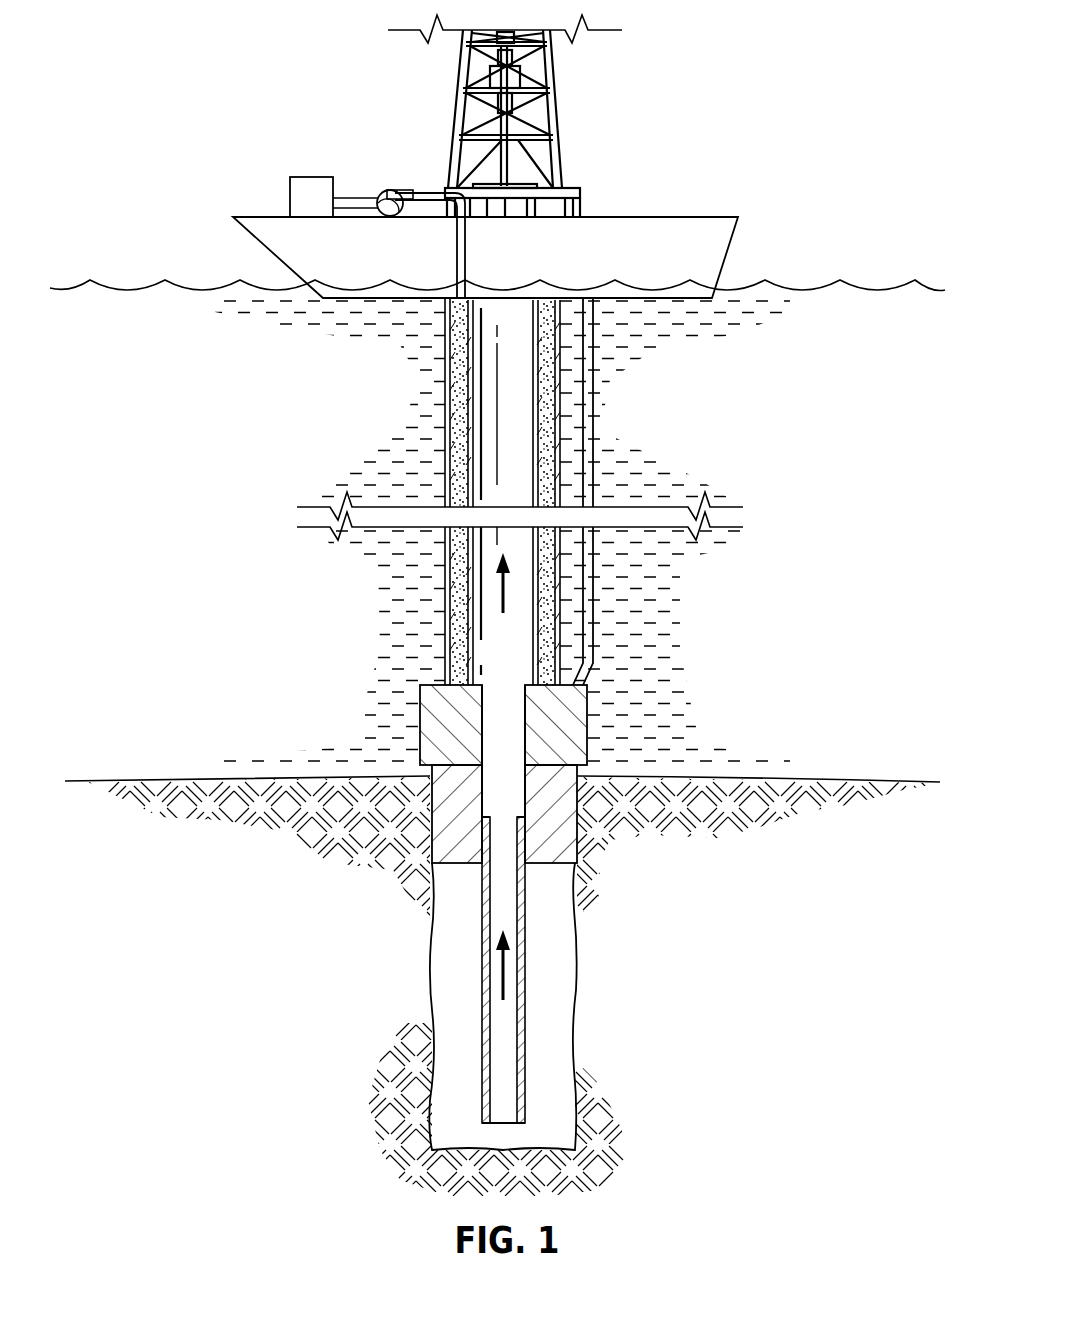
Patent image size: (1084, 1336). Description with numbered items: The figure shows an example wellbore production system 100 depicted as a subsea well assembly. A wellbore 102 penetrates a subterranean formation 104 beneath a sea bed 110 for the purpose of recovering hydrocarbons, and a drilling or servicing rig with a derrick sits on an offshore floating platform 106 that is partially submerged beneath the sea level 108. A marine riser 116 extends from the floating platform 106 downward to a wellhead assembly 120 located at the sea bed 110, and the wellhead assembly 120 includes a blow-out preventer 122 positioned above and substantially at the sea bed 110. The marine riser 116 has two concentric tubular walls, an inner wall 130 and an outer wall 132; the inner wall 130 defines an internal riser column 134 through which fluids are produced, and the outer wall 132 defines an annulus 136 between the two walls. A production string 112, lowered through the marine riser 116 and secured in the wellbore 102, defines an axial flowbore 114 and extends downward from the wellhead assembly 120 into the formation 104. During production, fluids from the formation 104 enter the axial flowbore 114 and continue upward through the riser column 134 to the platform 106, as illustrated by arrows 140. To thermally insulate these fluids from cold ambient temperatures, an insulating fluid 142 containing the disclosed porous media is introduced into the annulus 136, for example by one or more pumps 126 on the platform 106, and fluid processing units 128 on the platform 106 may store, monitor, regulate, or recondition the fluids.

The wellbore production system 100 is at (284, 72).
The wellbore 102 is at (580, 985).
The subterranean formation 104 is at (253, 865).
The offshore floating platform 106 is at (263, 217).
The sea level 108 is at (106, 280).
The sea bed 110 is at (108, 781).
The production string 112 is at (523, 1040).
The axial flowbore 114 is at (503, 907).
The marine riser 116 is at (572, 601).
The wellhead assembly 120 is at (565, 838).
The blow-out preventer 122 is at (588, 700).
The pump 126 is at (385, 190).
The fluid processing unit 128 is at (302, 177).
The inner wall 130 is at (560, 392).
The outer wall 132 is at (455, 422).
The riser column 134 is at (525, 432).
The annulus 136 is at (462, 632).
The arrows 140 is at (507, 615).
The insulating fluid 142 is at (550, 302).